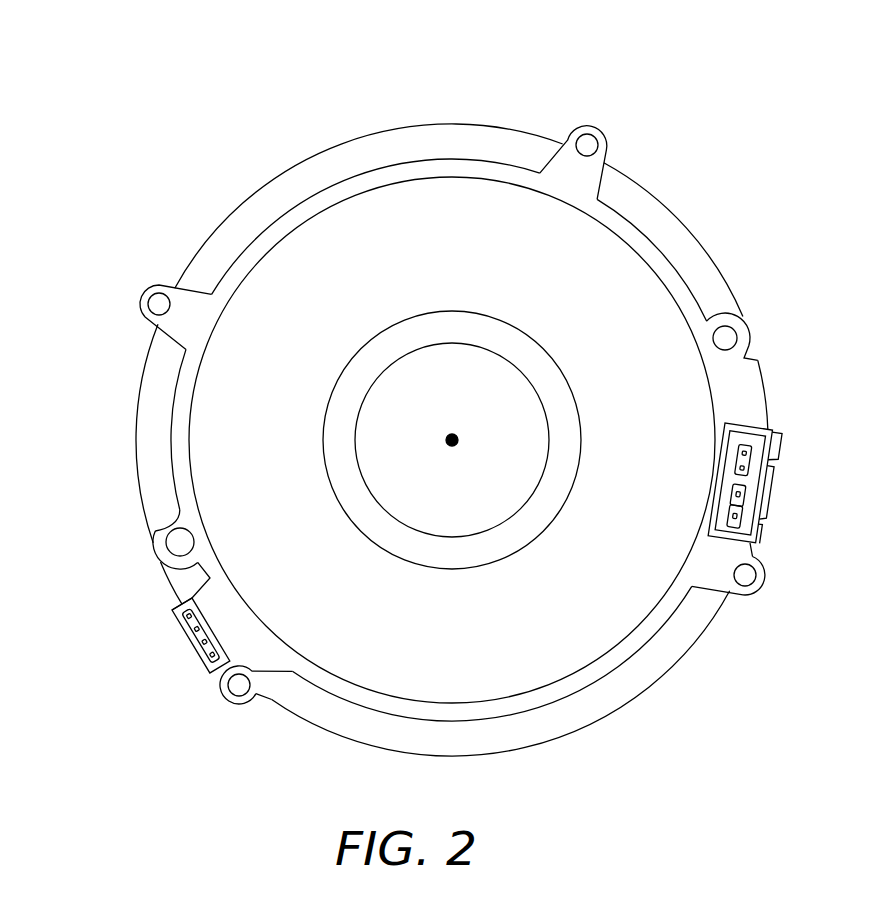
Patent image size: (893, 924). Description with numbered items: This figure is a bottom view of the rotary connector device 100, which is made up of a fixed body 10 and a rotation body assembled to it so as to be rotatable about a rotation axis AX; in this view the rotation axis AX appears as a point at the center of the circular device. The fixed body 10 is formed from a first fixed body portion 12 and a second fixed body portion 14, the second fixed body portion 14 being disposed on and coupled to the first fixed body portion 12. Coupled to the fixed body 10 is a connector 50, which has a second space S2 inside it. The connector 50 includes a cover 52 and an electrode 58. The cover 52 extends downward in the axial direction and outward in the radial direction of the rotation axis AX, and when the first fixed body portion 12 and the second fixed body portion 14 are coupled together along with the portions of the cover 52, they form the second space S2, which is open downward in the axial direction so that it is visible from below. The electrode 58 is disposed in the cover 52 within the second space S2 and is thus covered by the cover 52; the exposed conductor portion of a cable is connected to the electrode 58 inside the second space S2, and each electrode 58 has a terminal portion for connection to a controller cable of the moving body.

The rotary connector device 100 is at (670, 134).
The fixed body 10 is at (575, 63).
The first fixed body portion 12 is at (503, 193).
The second fixed body portion 14 is at (488, 160).
The rotation axis AX is at (458, 436).
The second space S2 is at (178, 606).
The connector 50 is at (120, 752).
The cover 52 is at (210, 672).
The electrode 58 is at (200, 653).